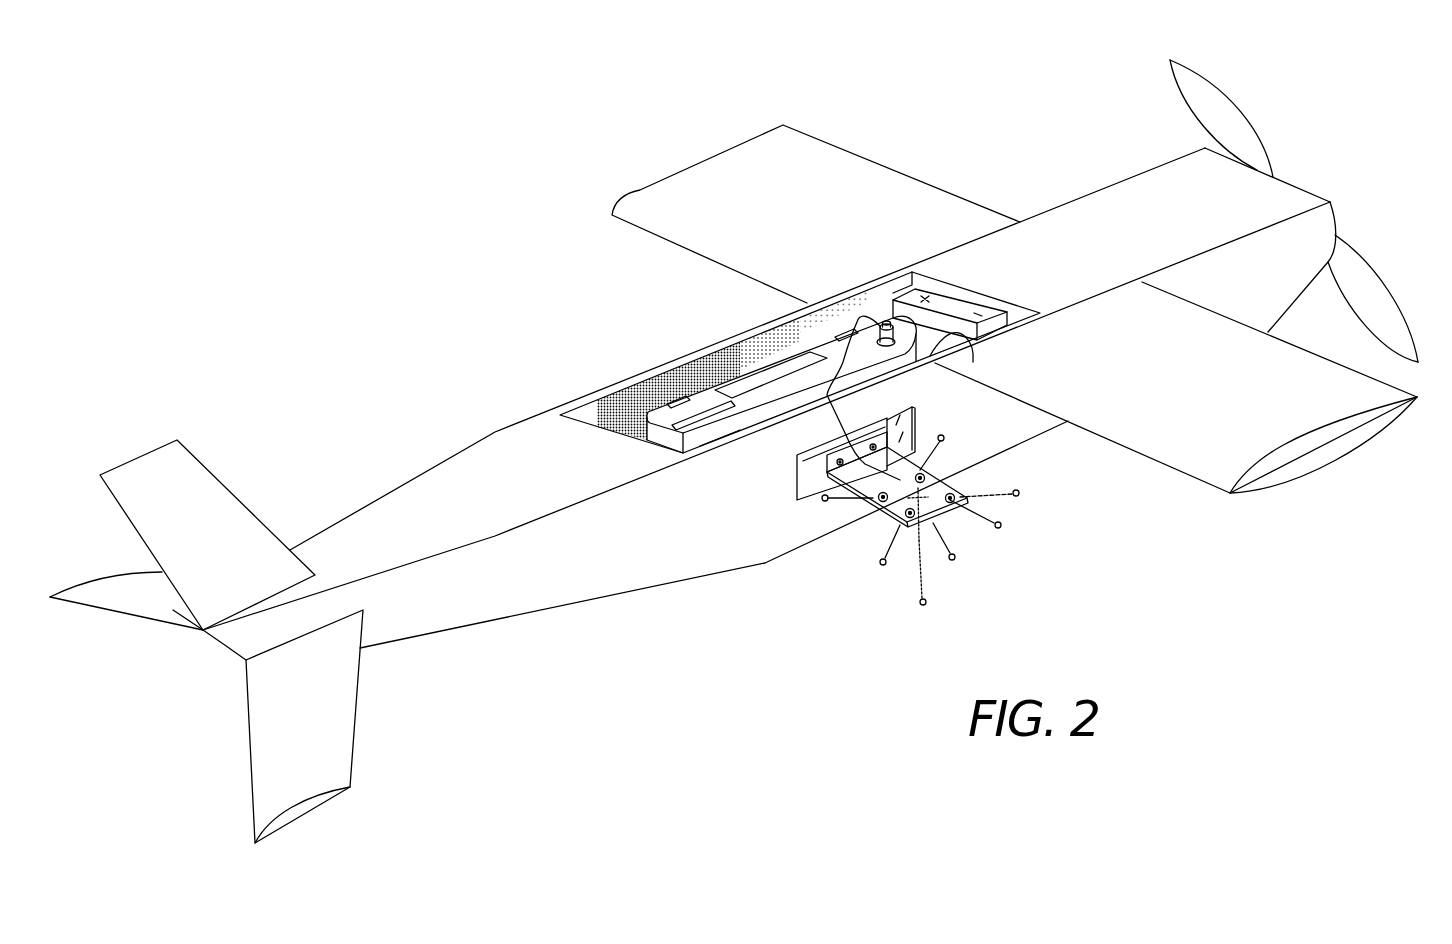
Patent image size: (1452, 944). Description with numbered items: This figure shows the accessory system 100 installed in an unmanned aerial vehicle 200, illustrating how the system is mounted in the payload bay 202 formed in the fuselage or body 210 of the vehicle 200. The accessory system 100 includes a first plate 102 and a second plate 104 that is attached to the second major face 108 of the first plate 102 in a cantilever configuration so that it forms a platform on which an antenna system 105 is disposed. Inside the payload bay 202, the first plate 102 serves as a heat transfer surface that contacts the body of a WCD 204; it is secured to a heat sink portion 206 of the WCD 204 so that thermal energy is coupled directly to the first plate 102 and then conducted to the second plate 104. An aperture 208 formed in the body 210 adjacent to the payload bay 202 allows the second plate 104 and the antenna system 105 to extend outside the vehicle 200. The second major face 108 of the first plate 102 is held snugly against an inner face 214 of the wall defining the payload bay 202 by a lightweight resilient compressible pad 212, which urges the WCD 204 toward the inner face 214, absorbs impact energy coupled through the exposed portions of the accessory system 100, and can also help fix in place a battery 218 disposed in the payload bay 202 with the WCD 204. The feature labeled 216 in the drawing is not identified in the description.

The accessory system 100 is at (890, 514).
The first plate 102 is at (898, 420).
The second plate 104 is at (912, 468).
The antenna system 105 is at (962, 468).
The second major face 108 is at (756, 576).
The unmanned aerial vehicle 200 is at (688, 108).
The payload bay 202 is at (592, 405).
The WCD 204 is at (708, 390).
The heat sink portion 206 is at (816, 447).
The aperture 208 is at (811, 469).
The fuselage or body 210 is at (652, 559).
The resilient compressible pad 212 is at (642, 398).
The inner face 214 is at (966, 355).
The compartment edge 216 is at (718, 445).
The battery 218 is at (957, 303).